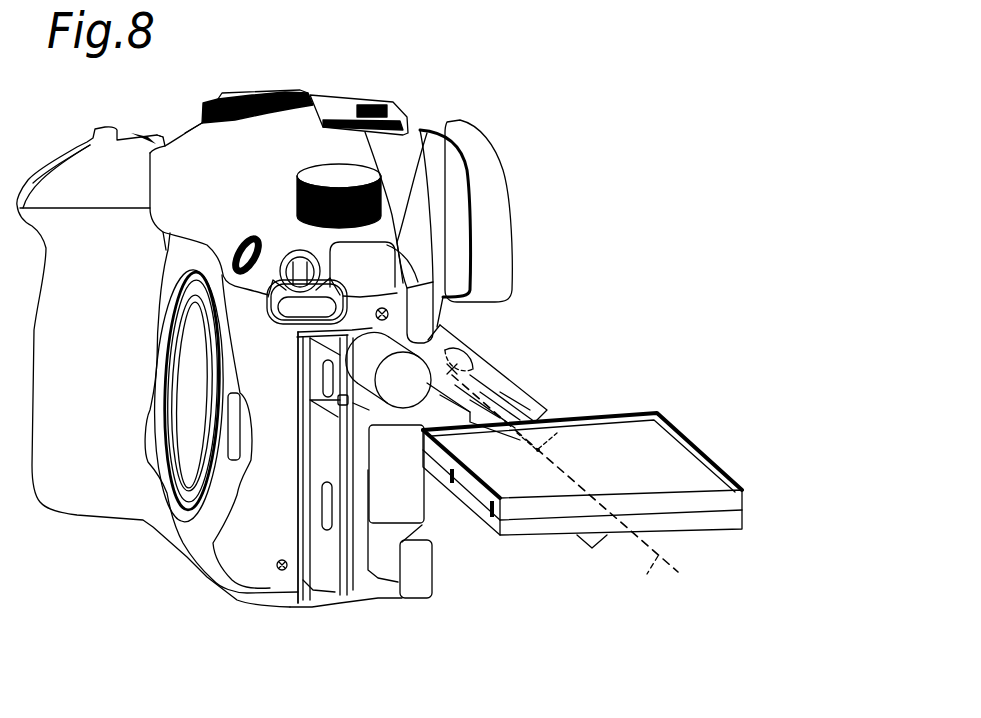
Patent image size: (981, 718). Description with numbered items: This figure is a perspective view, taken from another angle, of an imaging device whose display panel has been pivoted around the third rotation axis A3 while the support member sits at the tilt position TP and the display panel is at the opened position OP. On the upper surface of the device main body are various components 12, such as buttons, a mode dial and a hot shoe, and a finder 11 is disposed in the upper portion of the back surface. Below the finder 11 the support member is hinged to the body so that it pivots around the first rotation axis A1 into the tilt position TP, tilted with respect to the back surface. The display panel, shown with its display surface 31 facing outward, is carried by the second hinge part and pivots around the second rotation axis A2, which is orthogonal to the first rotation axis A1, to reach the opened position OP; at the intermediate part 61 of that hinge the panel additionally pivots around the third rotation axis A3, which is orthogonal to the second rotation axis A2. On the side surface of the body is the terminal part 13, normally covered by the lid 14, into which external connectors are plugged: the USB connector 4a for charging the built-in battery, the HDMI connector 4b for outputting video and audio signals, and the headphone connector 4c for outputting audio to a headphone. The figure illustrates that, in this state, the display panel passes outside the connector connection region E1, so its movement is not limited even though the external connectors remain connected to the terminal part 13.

The various components 12 is at (311, 76).
The connector connection region E1 is at (393, 295).
The finder 11 is at (487, 217).
The tilt position TP is at (531, 362).
The first rotation axis A1 is at (432, 388).
The intermediate part 61 is at (527, 407).
The HDMI connector 4b is at (382, 483).
The headphone connector 4c is at (387, 383).
The USB connector 4a is at (408, 572).
The terminal part 13 is at (419, 616).
The lid 14 is at (317, 437).
The display surface 31 is at (660, 450).
The third rotation axis A3 is at (537, 449).
The opened position OP is at (740, 453).
The second rotation axis A2 is at (649, 578).